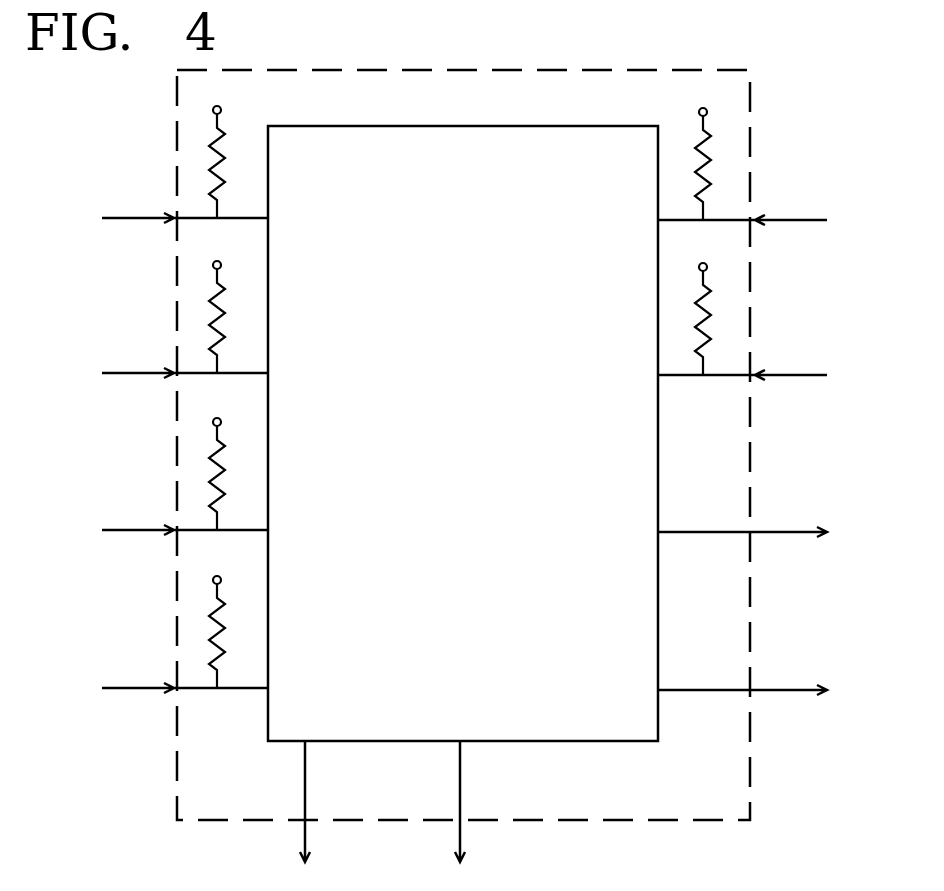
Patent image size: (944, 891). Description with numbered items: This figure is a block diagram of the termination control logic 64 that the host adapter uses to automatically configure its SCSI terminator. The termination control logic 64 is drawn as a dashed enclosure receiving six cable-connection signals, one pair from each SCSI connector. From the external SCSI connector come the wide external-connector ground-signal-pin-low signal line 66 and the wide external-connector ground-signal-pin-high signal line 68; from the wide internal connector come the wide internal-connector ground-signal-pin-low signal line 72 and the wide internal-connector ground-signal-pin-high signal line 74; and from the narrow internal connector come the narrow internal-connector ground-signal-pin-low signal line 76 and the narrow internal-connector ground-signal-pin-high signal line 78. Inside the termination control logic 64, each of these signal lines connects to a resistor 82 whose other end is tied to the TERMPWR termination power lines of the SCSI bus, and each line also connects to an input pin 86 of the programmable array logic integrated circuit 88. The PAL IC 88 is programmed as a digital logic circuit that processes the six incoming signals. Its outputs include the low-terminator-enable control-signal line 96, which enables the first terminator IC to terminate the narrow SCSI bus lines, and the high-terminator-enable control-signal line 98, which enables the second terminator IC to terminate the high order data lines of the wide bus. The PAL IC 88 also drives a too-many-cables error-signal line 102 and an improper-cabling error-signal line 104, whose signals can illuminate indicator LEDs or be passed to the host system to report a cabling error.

The termination control logic 64 is at (515, 70).
The wide external-connector ground-signal-pin-low signal line 66 is at (803, 220).
The wide external-connector ground-signal-pin-high signal line 68 is at (803, 375).
The wide internal-connector ground-signal-pin-low signal line 72 is at (108, 218).
The wide internal-connector ground-signal-pin-high signal line 74 is at (108, 373).
The narrow internal-connector ground-signal-pin-low signal line 76 is at (108, 530).
The narrow internal-connector ground-signal-pin-high signal line 78 is at (108, 688).
The resistor 82 is at (463, 384).
The input pin 86 is at (268, 218).
The programmable array logic integrated circuit 88 is at (492, 603).
The low-terminator-enable control-signal line 96 is at (305, 771).
The high-terminator-enable control-signal line 98 is at (460, 771).
The too-many-cables error-signal line 102 is at (803, 532).
The improper-cabling error-signal line 104 is at (803, 690).